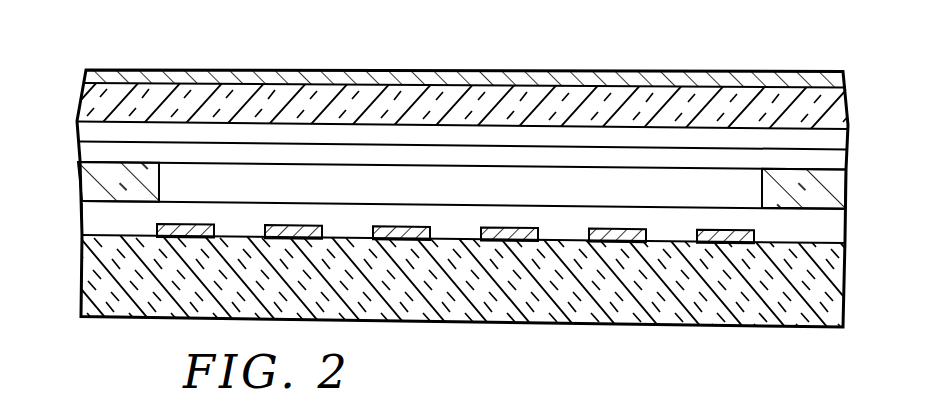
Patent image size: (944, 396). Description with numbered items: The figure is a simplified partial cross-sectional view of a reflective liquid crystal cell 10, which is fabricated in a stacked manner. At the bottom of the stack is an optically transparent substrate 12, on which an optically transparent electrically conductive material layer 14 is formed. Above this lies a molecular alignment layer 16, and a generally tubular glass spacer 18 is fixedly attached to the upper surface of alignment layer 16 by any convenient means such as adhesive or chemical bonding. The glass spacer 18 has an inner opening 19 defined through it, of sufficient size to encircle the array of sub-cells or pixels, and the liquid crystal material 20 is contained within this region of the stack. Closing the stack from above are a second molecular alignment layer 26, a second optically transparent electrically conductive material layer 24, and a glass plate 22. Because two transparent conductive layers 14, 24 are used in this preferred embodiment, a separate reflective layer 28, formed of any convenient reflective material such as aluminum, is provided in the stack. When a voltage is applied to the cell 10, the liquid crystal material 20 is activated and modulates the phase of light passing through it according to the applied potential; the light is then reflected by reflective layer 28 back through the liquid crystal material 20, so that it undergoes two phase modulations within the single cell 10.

The reflective liquid crystal cell 10 is at (470, 374).
The optically transparent substrate 12 is at (479, 294).
The optically transparent electrically conductive material layer 14 is at (312, 243).
The molecular alignment layer 16 is at (845, 233).
The glass spacer 18 is at (78, 186).
The inner opening 19 is at (679, 198).
The liquid crystal material 20 is at (470, 198).
The glass plate 22 is at (849, 109).
The optically transparent electrically conductive material layer 24 is at (847, 143).
The molecular alignment layer 26 is at (846, 168).
The reflective layer 28 is at (441, 70).